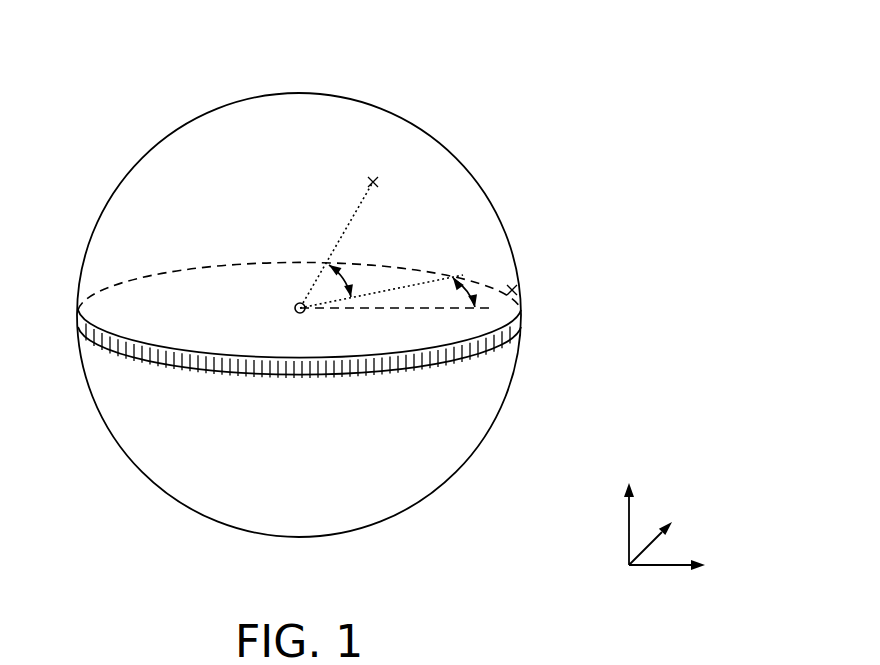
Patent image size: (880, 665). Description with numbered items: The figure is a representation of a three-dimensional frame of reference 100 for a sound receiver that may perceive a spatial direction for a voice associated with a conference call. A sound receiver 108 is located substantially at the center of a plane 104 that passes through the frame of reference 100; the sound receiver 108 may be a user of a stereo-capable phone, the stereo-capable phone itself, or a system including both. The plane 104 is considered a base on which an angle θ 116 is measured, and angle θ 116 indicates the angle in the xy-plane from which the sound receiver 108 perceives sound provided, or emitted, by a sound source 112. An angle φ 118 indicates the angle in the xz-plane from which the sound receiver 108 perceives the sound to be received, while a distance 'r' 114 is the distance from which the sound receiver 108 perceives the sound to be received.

The frame of reference 100 is at (565, 44).
The plane 104 is at (514, 289).
The sound receiver 108 is at (296, 304).
The sound source 112 is at (376, 180).
The distance 'r' 114 is at (360, 210).
The angle θ 116 is at (493, 284).
The angle φ 118 is at (375, 270).